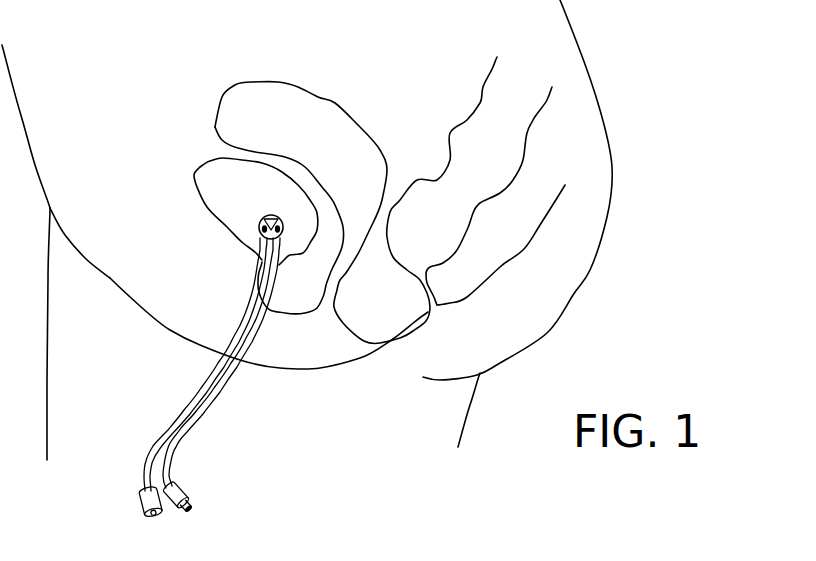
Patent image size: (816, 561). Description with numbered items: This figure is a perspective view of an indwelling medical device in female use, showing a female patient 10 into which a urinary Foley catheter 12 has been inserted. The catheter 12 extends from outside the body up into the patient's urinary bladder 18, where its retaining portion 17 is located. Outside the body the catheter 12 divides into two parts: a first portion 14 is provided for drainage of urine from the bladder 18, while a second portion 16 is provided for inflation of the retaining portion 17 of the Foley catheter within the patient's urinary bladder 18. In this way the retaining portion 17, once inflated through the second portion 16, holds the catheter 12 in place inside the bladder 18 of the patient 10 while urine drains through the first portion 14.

The female patient 10 is at (654, 76).
The urinary Foley catheter 12 is at (132, 482).
The first portion 14 is at (142, 507).
The second portion 16 is at (188, 488).
The retaining portion 17 is at (258, 222).
The urinary bladder 18 is at (199, 167).